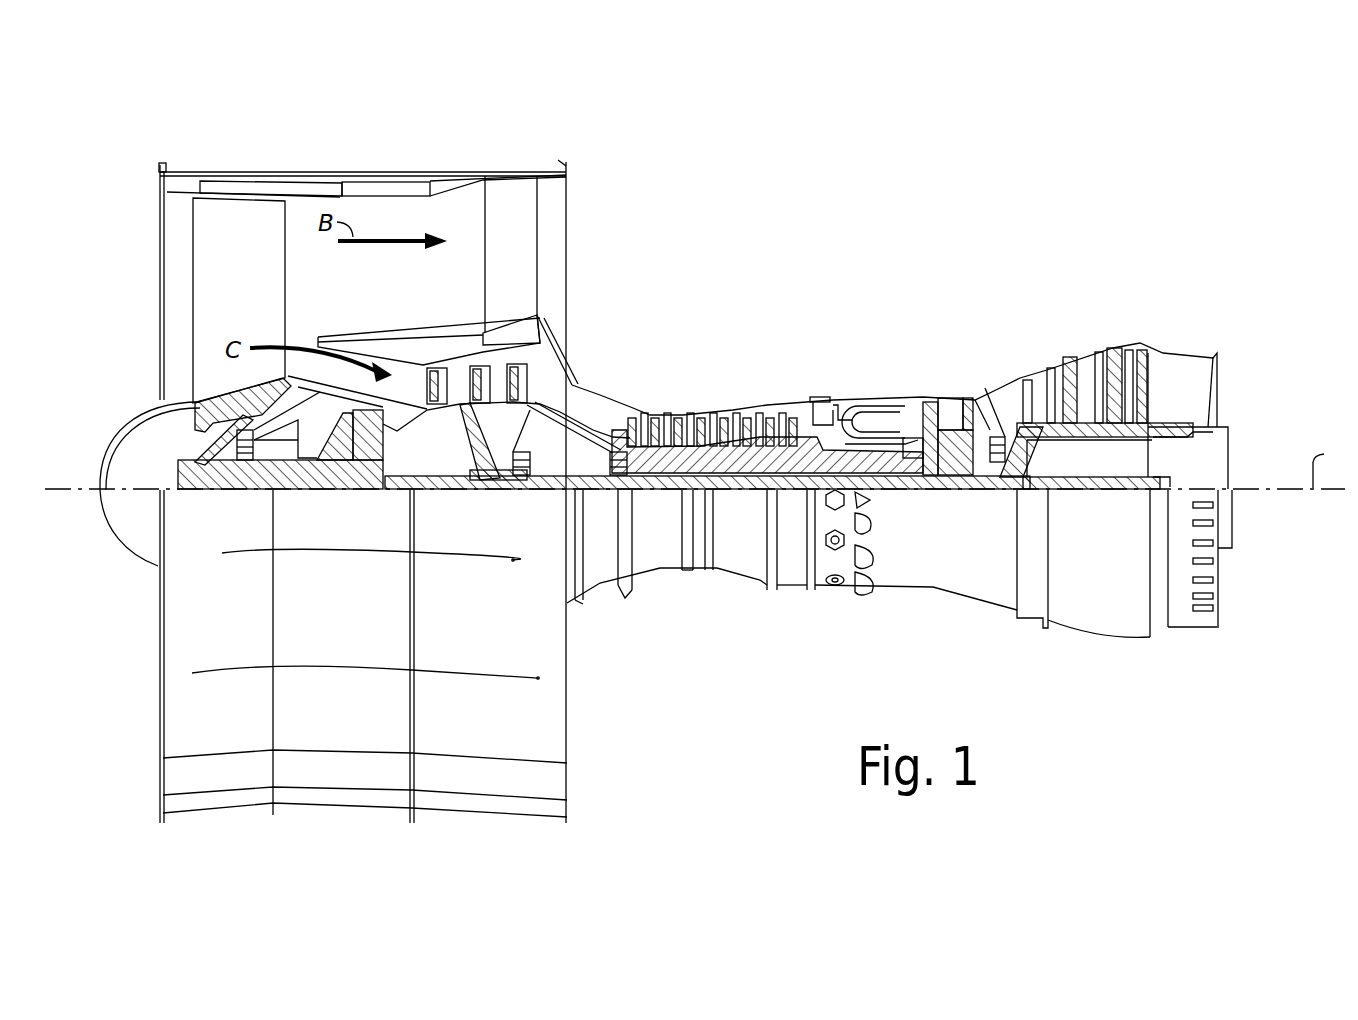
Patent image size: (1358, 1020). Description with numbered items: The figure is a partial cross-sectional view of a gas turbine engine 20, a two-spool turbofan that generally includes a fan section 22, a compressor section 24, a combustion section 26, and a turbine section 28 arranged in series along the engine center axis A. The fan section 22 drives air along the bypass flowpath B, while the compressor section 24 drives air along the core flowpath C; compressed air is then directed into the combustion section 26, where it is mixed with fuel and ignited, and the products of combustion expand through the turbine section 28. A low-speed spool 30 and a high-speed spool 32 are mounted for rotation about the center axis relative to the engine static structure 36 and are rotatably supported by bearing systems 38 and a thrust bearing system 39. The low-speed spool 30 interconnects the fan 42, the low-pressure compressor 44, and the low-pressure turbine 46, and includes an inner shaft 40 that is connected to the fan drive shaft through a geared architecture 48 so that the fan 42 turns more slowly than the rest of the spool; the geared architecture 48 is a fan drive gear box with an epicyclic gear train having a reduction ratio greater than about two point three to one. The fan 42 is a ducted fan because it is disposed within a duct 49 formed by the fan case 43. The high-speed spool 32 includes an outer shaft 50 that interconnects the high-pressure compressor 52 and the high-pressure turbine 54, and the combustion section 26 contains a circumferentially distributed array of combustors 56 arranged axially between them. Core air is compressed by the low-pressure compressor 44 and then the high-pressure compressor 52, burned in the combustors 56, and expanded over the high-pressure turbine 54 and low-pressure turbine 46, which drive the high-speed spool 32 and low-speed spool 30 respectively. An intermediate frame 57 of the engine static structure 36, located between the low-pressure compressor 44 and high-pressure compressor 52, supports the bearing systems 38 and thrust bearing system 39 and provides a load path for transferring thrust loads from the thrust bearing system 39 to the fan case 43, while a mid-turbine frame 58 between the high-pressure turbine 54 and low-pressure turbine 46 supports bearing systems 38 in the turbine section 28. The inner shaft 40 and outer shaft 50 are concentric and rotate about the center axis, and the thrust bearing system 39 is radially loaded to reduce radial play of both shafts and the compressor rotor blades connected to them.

The gas turbine engine 20 is at (1055, 176).
The fan section 22 is at (390, 138).
The compressor section 24 is at (415, 278).
The combustion section 26 is at (923, 280).
The turbine section 28 is at (927, 280).
The low-speed spool 30 is at (742, 500).
The high-speed spool 32 is at (772, 455).
The engine static structure 36 is at (792, 597).
The bearing systems 38 is at (247, 470).
The thrust bearing system 39 is at (620, 490).
The inner shaft 40 is at (590, 490).
The fan 42 is at (224, 278).
The fan case 43 is at (449, 172).
The low-pressure compressor 44 is at (494, 386).
The low-pressure turbine 46 is at (1090, 370).
The geared architecture 48 is at (371, 470).
The duct 49 is at (522, 172).
The outer shaft 50 is at (880, 470).
The high-pressure compressor 52 is at (692, 425).
The high-pressure turbine 54 is at (951, 398).
The combustors 56 is at (866, 420).
The intermediate frame 57 is at (586, 382).
The mid-turbine frame 58 is at (992, 375).